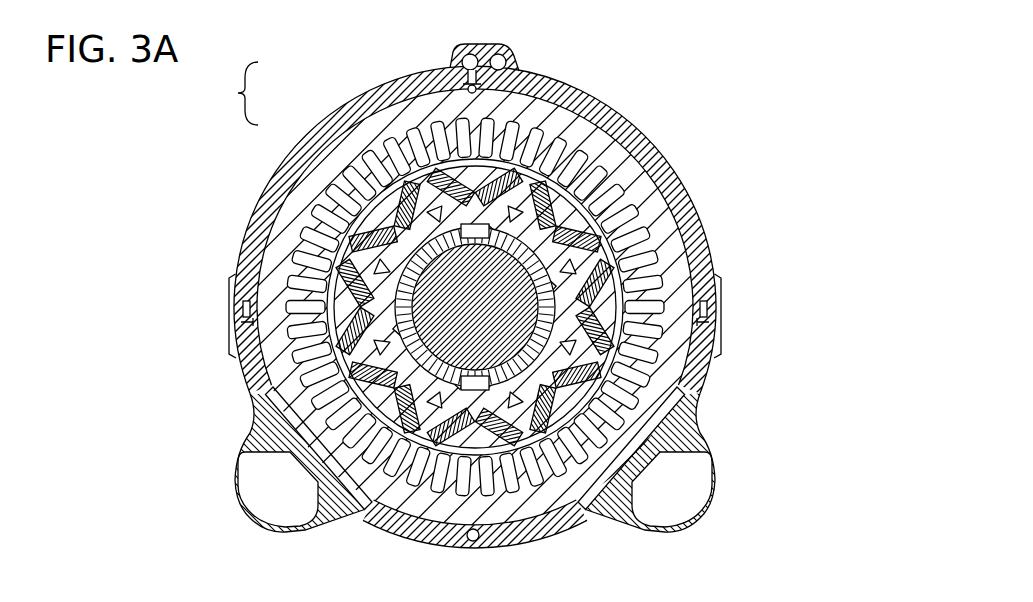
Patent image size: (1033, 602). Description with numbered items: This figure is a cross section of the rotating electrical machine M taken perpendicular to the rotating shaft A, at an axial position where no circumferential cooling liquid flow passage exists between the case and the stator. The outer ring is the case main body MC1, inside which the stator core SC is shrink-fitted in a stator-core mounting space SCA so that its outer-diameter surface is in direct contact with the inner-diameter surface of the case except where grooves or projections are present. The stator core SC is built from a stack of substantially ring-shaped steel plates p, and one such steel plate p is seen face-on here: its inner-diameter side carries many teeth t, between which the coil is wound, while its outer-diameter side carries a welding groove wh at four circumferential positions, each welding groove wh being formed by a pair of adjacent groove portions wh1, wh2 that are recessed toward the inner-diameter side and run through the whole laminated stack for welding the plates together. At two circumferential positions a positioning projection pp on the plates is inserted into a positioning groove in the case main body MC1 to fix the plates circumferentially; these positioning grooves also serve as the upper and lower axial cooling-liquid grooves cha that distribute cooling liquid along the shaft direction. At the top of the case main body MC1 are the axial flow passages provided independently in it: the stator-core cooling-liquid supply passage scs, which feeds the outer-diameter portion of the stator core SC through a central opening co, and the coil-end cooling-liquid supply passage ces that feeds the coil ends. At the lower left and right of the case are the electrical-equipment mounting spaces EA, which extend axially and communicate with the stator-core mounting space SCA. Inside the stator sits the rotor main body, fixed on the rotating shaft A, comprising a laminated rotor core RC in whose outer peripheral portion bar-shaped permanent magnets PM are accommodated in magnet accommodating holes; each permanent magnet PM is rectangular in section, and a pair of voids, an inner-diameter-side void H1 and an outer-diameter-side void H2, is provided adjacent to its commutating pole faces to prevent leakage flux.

The rotating electrical machine M is at (731, 128).
The magnet accommodating hole H is at (585, 190).
The welding groove wh is at (688, 553).
The groove portion wh1 is at (373, 120).
The groove portion wh2 is at (357, 127).
The stator-core cooling-liquid supply passage scs is at (462, 60).
The coil-end cooling-liquid supply passage ces is at (506, 62).
The central opening co is at (468, 78).
The axial cooling-liquid groove cha is at (478, 535).
The stator core SC is at (640, 205).
The stator-core mounting space SCA is at (407, 520).
The tooth t is at (680, 250).
The steel plate p is at (690, 265).
The positioning projection pp is at (710, 307).
The rotating shaft A is at (598, 407).
The electrical-equipment mounting space EA is at (678, 497).
The inner-diameter-side void H1 is at (387, 212).
The outer-diameter-side void H2 is at (330, 262).
The rotor core RC is at (478, 445).
The permanent magnet PM is at (400, 408).
The case main body MC1 is at (262, 413).